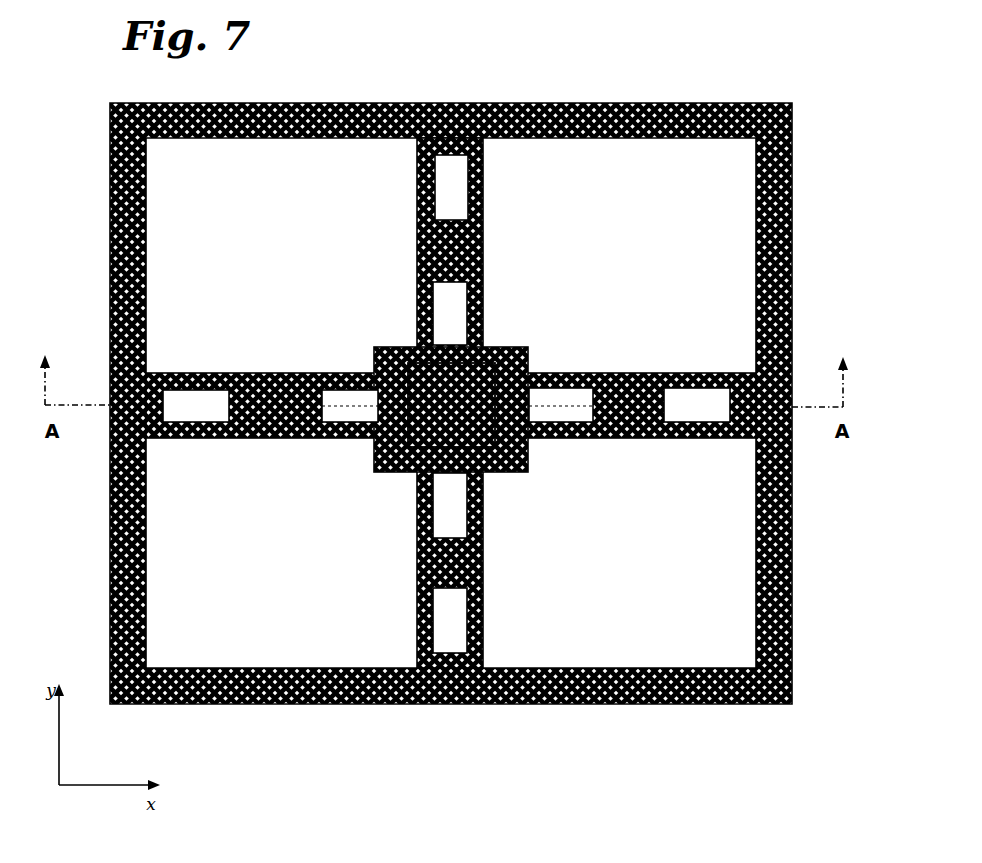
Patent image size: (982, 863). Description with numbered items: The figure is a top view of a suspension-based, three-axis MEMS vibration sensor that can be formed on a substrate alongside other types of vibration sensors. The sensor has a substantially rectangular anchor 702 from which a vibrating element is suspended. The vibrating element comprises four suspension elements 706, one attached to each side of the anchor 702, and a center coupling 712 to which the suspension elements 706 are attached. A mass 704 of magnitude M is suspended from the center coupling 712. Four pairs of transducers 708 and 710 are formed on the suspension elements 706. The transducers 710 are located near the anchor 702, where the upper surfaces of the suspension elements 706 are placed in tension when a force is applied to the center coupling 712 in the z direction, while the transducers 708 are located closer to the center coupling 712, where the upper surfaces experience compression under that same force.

The anchor 702 is at (345, 703).
The mass 704 is at (520, 348).
The suspension elements 706 is at (487, 153).
The transducers 708 is at (457, 410).
The transducers 710 is at (446, 404).
The center coupling 712 is at (467, 400).